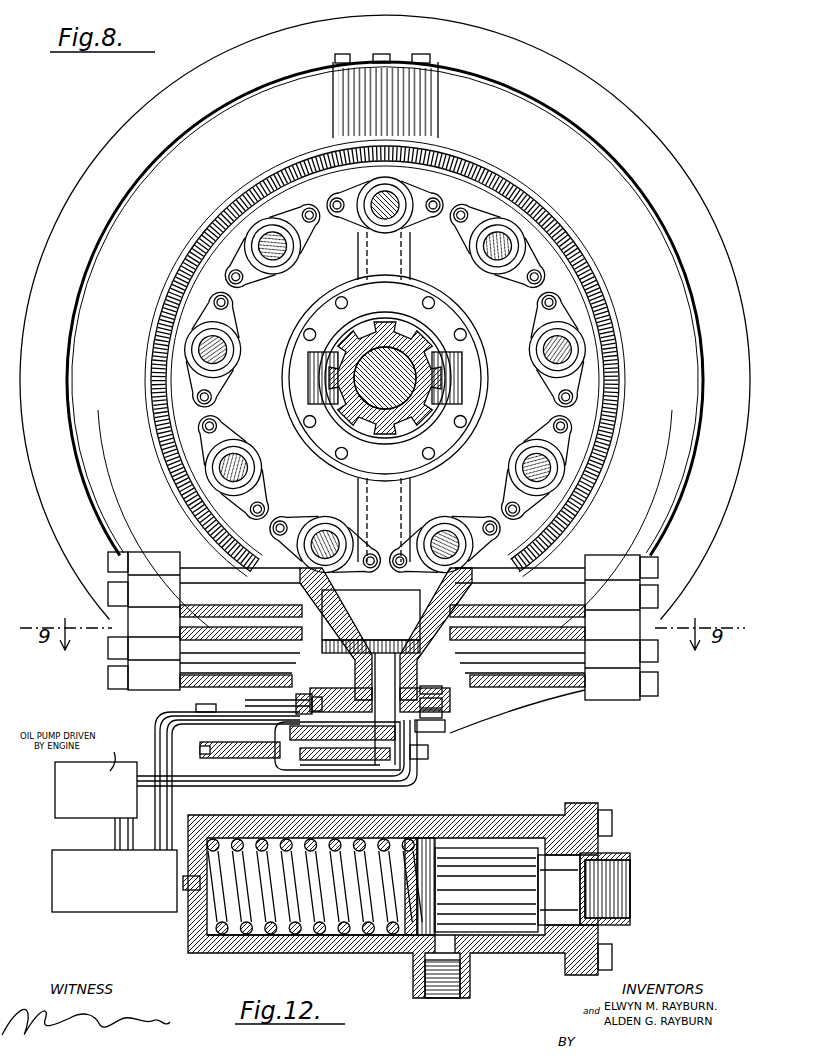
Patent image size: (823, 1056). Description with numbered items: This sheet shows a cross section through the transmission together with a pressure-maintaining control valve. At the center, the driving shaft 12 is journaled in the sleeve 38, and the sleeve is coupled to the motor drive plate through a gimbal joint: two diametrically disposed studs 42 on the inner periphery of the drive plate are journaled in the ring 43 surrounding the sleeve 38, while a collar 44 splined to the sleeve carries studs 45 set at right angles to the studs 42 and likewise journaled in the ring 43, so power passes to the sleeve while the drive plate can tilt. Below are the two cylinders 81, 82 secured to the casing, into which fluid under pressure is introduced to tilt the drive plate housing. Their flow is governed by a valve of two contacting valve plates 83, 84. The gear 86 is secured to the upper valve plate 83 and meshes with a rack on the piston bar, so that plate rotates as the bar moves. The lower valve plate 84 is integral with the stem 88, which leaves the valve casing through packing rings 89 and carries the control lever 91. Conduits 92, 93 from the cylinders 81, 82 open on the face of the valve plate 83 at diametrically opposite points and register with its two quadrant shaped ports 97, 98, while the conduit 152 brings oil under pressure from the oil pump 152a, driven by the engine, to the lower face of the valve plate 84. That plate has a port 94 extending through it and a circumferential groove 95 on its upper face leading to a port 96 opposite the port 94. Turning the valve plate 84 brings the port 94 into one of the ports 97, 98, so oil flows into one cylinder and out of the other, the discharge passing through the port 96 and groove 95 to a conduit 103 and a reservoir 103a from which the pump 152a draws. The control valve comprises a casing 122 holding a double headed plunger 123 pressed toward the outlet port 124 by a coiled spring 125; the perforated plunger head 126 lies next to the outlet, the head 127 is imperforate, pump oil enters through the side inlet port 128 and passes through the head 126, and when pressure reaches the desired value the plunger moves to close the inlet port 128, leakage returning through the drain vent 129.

In FIG. 8, the driving shaft 12 is at (390, 365).
In FIG. 8, the sleeve 38 is at (355, 412).
In FIG. 8, the studs 42 is at (405, 280).
In FIG. 8, the ring 43 is at (445, 440).
In FIG. 8, the collar 44 is at (365, 428).
In FIG. 8, the studs 45 is at (320, 378).
In FIG. 8, the cylinder 81 is at (240, 626).
In FIG. 8, the cylinder 82 is at (529, 627).
In FIG. 8, the valve plate 83 is at (445, 703).
In FIG. 8, the valve plate 84 is at (303, 775).
In FIG. 8, the gear 86 is at (368, 652).
In FIG. 8, the stem 88 is at (430, 772).
In FIG. 8, the packing rings 89 is at (298, 722).
In FIG. 8, the control lever 91 is at (232, 752).
In FIG. 8, the conduit 92 is at (178, 705).
In FIG. 8, the conduit 93 is at (540, 627).
In FIG. 8, the port 94 is at (450, 728).
In FIG. 8, the circumferential groove 95 is at (445, 712).
In FIG. 8, the port 96 is at (330, 700).
In FIG. 8, the quadrant shaped port 97 is at (330, 683).
In FIG. 8, the quadrant shaped port 98 is at (445, 690).
In FIG. 8, the conduit 103 is at (222, 708).
In FIG. 8, the reservoir 103a is at (114, 881).
In FIG. 8, the conduit 152 is at (430, 752).
In FIG. 8, the oil pump 152a is at (96, 790).
In FIG. 12, the casing 122 is at (360, 950).
In FIG. 12, the double headed plunger 123 is at (475, 905).
In FIG. 12, the outlet port 124 is at (630, 890).
In FIG. 12, the coiled spring 125 is at (240, 925).
In FIG. 12, the plunger head 126 is at (590, 865).
In FIG. 12, the head 127 is at (467, 833).
In FIG. 12, the inlet port 128 is at (447, 990).
In FIG. 12, the drain vent 129 is at (185, 883).